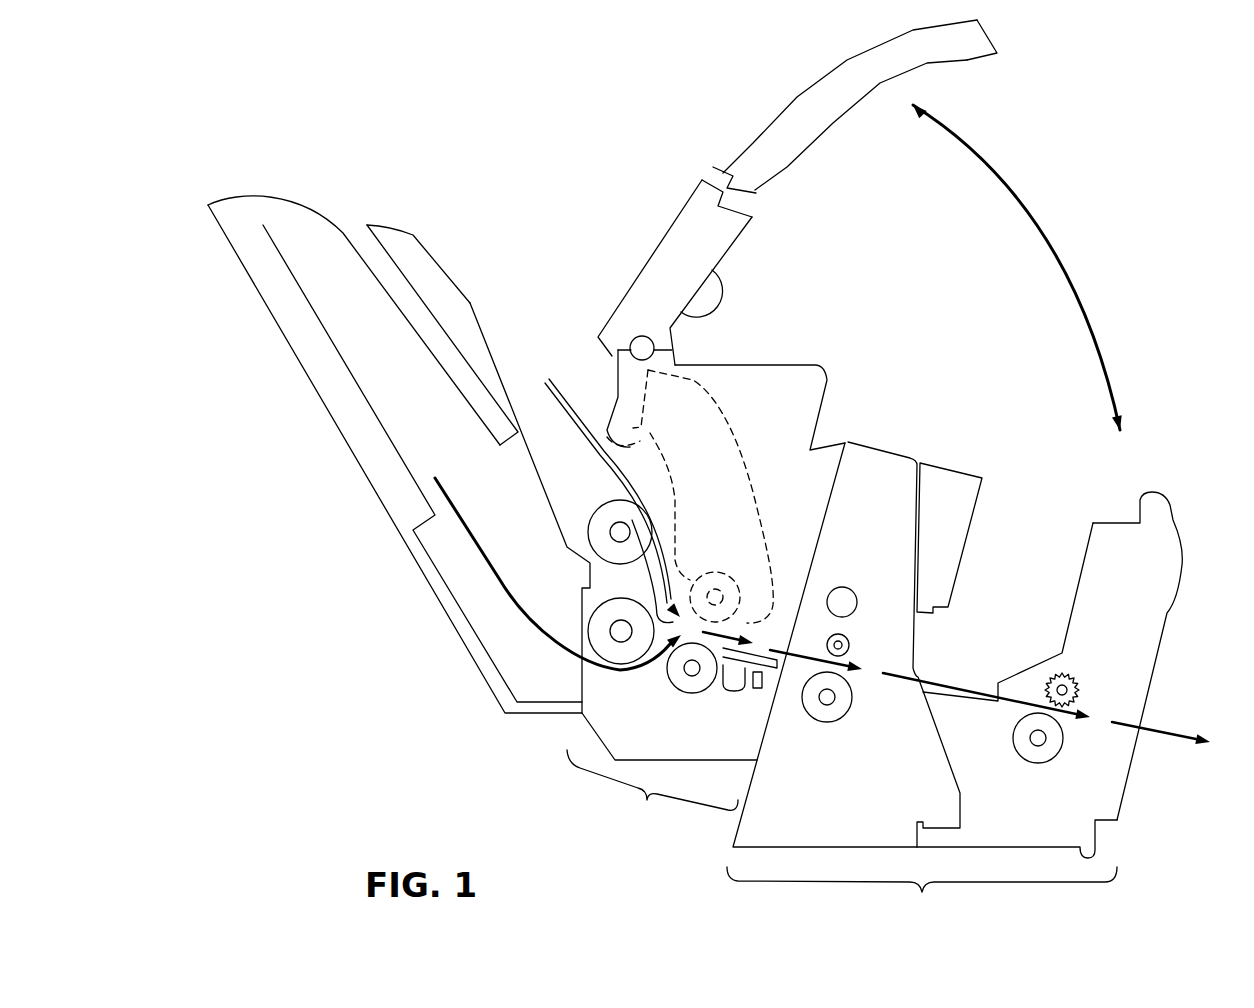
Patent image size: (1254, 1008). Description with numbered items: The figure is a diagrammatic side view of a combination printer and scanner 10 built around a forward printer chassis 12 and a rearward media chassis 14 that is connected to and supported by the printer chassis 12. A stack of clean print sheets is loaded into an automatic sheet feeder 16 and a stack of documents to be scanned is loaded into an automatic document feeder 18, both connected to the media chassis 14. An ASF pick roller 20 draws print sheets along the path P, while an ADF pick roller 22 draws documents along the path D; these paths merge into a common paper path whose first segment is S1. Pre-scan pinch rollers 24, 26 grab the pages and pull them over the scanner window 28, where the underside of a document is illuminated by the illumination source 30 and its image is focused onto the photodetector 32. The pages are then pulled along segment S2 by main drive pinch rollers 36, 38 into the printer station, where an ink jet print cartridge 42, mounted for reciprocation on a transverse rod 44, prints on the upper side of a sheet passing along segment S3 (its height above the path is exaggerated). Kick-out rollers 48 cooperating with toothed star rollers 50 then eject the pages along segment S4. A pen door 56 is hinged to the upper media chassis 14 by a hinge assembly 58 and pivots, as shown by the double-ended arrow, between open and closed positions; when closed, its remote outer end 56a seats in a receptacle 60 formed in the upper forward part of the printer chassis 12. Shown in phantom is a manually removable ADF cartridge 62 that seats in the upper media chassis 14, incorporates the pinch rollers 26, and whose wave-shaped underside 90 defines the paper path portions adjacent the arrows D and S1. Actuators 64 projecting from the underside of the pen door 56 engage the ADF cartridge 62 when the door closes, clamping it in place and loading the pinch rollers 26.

The combination printer and scanner 10 is at (560, 166).
The printer chassis 12 is at (896, 645).
The media chassis 14 is at (613, 569).
The automatic sheet feeder 16 is at (300, 203).
The automatic document feeder 18 is at (442, 277).
The ASF pick roller 20 is at (587, 627).
The ADF pick roller 22 is at (588, 531).
The pre-scan pinch roller 24 is at (680, 692).
The pre-scan pinch roller 26 is at (717, 570).
The scanner window 28 is at (773, 667).
The illumination source 30 is at (757, 692).
The photodetector 32 is at (723, 690).
The main drive pinch roller 36 is at (827, 723).
The main drive pinch roller 38 is at (850, 646).
The ink jet print cartridge 42 is at (957, 470).
The transverse rod 44 is at (842, 587).
The kick-out rollers 48 is at (1038, 763).
The toothed star rollers 50 is at (1076, 680).
The pen door 56 is at (793, 93).
The remote outer end of the pen door 56a is at (997, 50).
The hinge assembly 58 is at (640, 337).
The receptacle 60 is at (1125, 520).
The ADF cartridge 62 is at (739, 411).
The actuators 64 is at (732, 307).
The underside of the lower ADF cartridge section 90 is at (613, 412).
The print sheet path P is at (456, 508).
The document path D is at (624, 480).
The first paper path segment S1 is at (773, 605).
The second paper path segment S2 is at (805, 643).
The third paper path segment S3 is at (968, 693).
The fourth paper path segment S4 is at (1173, 732).